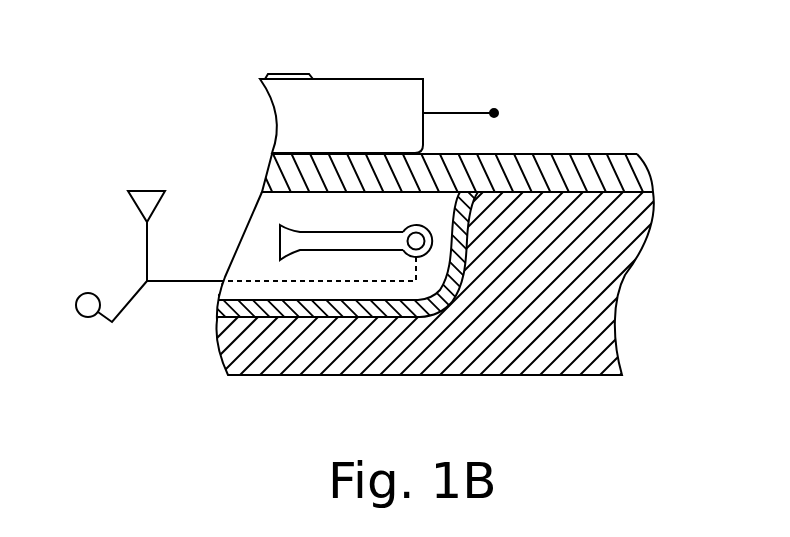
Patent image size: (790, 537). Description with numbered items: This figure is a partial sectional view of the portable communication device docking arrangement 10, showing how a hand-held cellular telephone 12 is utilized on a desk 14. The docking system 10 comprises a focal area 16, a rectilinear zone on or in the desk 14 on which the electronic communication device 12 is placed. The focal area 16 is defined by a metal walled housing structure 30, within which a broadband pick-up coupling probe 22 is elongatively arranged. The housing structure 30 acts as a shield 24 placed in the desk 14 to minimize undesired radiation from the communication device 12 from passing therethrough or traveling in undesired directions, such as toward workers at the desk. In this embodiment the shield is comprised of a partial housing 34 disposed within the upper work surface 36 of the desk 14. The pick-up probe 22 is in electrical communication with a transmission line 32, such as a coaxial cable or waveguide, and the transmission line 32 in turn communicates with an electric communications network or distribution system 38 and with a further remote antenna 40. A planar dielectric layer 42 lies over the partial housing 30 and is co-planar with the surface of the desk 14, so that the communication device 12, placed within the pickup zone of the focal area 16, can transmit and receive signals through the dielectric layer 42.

The portable communication device docking arrangement 10 is at (403, 222).
The hand-held cellular telephone 12 is at (348, 78).
The desk 14 is at (620, 283).
The focal area 16 is at (580, 153).
The pick-up coupling probe 22 is at (302, 231).
The shield 24 is at (300, 310).
The metal walled housing structure 30 is at (358, 318).
The transmission line 32 is at (176, 280).
The partial housing 34 is at (463, 237).
The upper work surface 36 is at (623, 153).
The electric communications network or distribution system 38 is at (80, 295).
The remote antenna 40 is at (145, 190).
The planar dielectric layer 42 is at (510, 153).